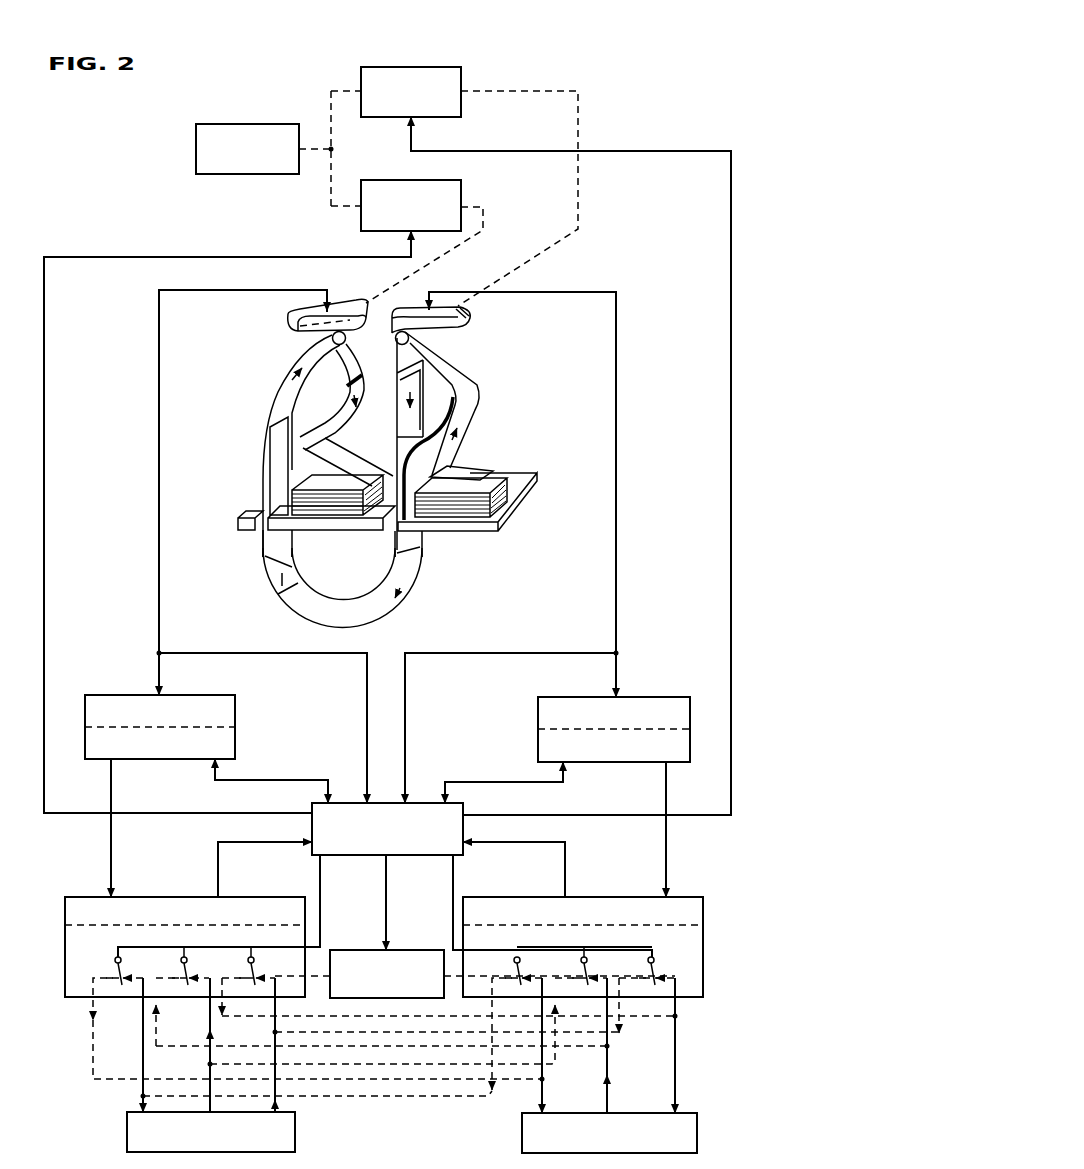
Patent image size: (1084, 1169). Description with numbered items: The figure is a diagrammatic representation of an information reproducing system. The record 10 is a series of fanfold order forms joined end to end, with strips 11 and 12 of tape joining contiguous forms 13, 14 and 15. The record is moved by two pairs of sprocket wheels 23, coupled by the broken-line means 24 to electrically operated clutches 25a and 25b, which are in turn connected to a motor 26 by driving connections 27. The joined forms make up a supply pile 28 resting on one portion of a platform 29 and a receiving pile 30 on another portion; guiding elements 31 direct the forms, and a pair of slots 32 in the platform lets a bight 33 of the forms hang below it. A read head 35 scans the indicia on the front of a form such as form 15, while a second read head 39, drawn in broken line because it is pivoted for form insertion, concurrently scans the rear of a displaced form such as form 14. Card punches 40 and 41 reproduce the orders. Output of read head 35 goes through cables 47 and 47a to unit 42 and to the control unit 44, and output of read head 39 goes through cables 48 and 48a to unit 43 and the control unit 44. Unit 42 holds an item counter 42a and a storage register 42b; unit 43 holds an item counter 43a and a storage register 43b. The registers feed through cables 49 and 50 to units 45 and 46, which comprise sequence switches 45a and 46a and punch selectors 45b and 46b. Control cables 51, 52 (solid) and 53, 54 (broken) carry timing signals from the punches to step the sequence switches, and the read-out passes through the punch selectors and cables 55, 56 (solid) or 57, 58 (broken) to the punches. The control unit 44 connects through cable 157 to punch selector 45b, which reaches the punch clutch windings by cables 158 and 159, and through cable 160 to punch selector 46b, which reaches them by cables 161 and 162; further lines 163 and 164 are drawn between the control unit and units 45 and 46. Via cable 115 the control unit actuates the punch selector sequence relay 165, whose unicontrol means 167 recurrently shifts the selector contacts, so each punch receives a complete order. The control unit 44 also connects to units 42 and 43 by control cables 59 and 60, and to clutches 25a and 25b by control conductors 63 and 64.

The record 10 is at (485, 398).
The strip 11 is at (350, 375).
The strip 12 is at (397, 383).
The form 13 is at (340, 413).
The form 14 is at (300, 355).
The form 15 is at (450, 365).
The sprocket wheel 23 is at (346, 342).
The mechanical coupling 24 is at (453, 252).
The electrically operated clutch 25a is at (420, 67).
The electrically operated clutch 25b is at (437, 180).
The motor 26 is at (237, 124).
The driving connection 27 is at (331, 149).
The supply pile 28 is at (467, 491).
The platform 29 is at (482, 528).
The receiving pile 30 is at (335, 490).
The guiding element 31 is at (450, 400).
The slot 32 is at (260, 530).
The bight 33 is at (334, 616).
The read head 35 is at (470, 314).
The second read head 39 is at (287, 320).
The card punch 40 is at (522, 1127).
The card punch 41 is at (127, 1131).
The unit 42 is at (574, 717).
The item counter 42a is at (673, 698).
The storage register 42b is at (538, 755).
The unit 43 is at (186, 713).
The item counter 43a is at (118, 695).
The storage register 43b is at (238, 750).
The control unit 44 is at (432, 805).
The unit 45 is at (604, 935).
The sequence switch 45a is at (703, 915).
The punch selector 45b is at (703, 947).
The unit 46 is at (163, 932).
The sequence switch 46a is at (72, 912).
The punch selector 46b is at (67, 947).
The conductor cable 47 is at (616, 372).
The conductor cable 47a is at (407, 680).
The conductor cable 48 is at (159, 381).
The conductor cable 48a is at (365, 677).
The conductor cable 49 is at (665, 778).
The conductor cable 50 is at (113, 794).
The control cable 51 is at (608, 1098).
The control cable 52 is at (208, 1022).
The control cable 53 is at (188, 1047).
The control cable 54 is at (560, 1061).
The conductor cable 55 is at (682, 1065).
The conductor cable 56 is at (278, 1102).
The conductor cable 57 is at (623, 1034).
The conductor cable 58 is at (257, 1017).
The control cable 59 is at (525, 783).
The control cable 60 is at (268, 782).
The control conductor 63 is at (670, 151).
The control conductor 64 is at (242, 257).
The cable 115 is at (385, 893).
The cable 157 is at (452, 872).
The cable 158 is at (542, 1093).
The cable 159 is at (475, 1100).
The cable 160 is at (318, 872).
The cable 161 is at (142, 1100).
The cable 162 is at (92, 1048).
The control line 163 is at (565, 880).
The control line 164 is at (217, 869).
The punch selector sequence relay 165 is at (367, 948).
The unicontrol means 167 is at (267, 972).